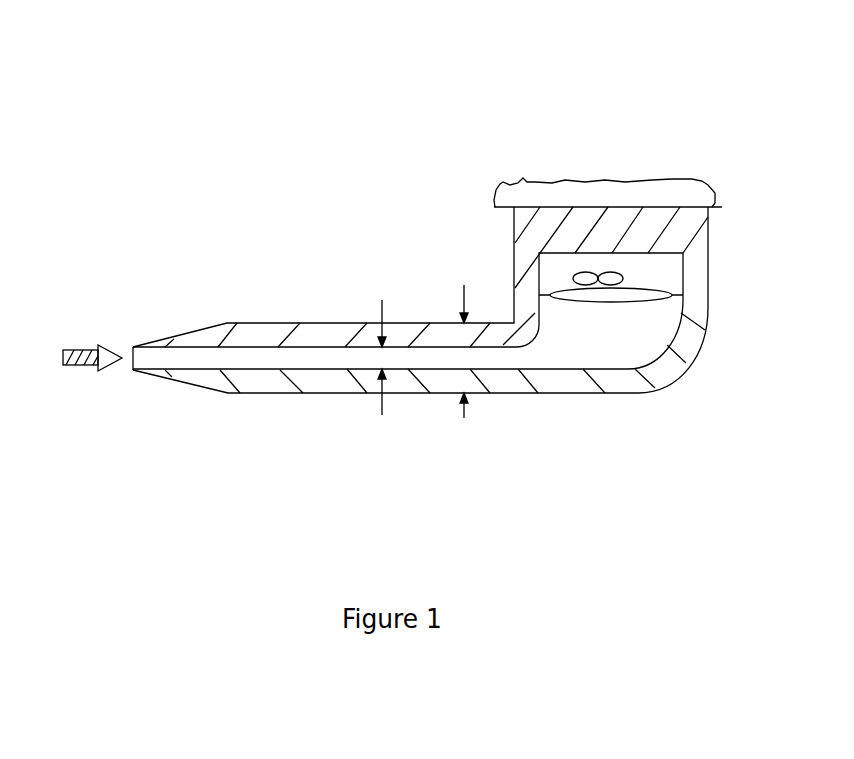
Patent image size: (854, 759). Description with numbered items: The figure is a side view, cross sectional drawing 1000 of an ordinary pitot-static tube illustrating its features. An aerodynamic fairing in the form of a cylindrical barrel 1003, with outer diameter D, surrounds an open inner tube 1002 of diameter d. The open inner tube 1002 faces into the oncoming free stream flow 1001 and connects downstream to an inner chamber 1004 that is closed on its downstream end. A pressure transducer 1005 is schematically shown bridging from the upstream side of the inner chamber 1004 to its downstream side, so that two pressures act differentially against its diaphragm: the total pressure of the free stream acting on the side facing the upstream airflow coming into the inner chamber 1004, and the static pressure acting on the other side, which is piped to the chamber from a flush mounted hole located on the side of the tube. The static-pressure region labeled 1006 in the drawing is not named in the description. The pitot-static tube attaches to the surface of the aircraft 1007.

The cross sectional drawing of an ordinary pitot-static tube 1000 is at (254, 65).
The oncoming free stream flow 1001 is at (72, 347).
The open inner tube 1002 is at (333, 358).
The cylindrical barrel 1003 is at (415, 325).
The inner chamber 1004 is at (585, 360).
The pressure transducer 1005 is at (662, 296).
The reference pressure cavity 1006 is at (626, 262).
The surface of the aircraft 1007 is at (544, 190).